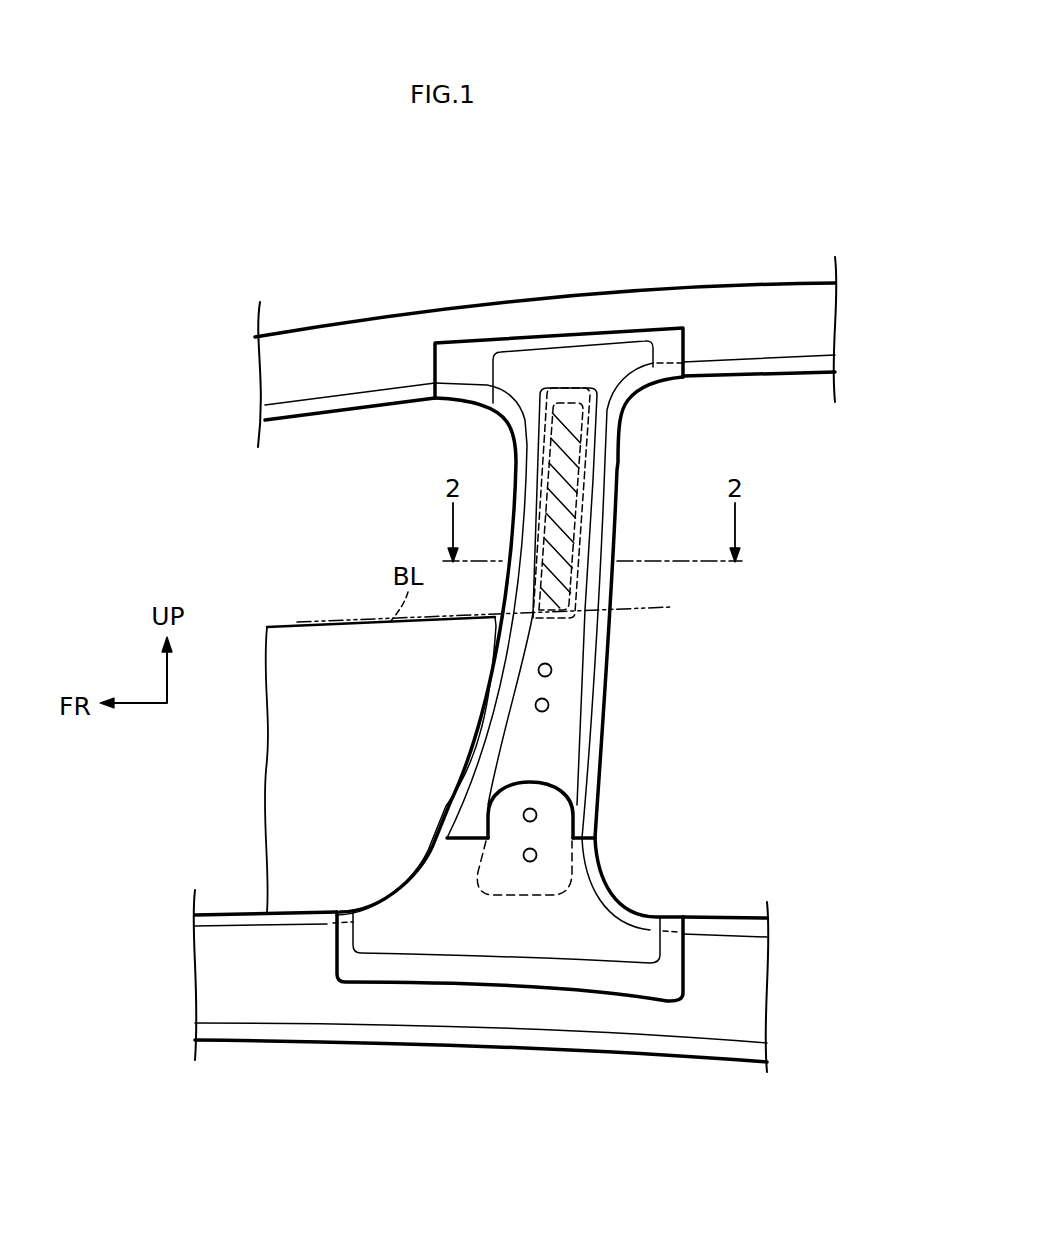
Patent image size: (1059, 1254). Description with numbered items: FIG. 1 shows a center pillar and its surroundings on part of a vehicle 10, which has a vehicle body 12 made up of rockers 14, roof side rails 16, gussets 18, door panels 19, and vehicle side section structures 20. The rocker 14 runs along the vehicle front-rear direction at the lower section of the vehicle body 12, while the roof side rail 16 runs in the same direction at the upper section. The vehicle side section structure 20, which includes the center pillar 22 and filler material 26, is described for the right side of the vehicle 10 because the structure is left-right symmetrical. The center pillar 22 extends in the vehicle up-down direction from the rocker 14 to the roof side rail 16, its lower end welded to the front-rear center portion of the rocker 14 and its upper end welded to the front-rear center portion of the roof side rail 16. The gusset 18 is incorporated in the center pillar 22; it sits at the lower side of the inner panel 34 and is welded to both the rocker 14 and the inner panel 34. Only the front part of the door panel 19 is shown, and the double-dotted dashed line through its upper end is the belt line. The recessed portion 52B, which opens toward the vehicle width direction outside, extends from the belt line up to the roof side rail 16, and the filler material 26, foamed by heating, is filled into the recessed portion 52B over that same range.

The vehicle 10 is at (757, 188).
The vehicle body 12 is at (662, 287).
The rocker 14 is at (728, 917).
The roof side rail 16 is at (768, 376).
The gusset 18 is at (582, 918).
The door panel 19 is at (275, 625).
The vehicle side section structure 20 is at (632, 515).
The center pillar 22 is at (608, 588).
The filler material 26 is at (580, 490).
The inner panel 34 is at (552, 750).
The recessed portion 52B is at (585, 458).